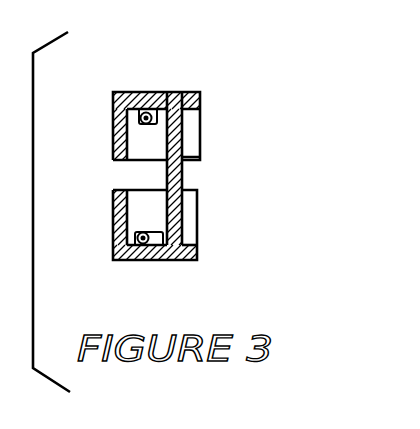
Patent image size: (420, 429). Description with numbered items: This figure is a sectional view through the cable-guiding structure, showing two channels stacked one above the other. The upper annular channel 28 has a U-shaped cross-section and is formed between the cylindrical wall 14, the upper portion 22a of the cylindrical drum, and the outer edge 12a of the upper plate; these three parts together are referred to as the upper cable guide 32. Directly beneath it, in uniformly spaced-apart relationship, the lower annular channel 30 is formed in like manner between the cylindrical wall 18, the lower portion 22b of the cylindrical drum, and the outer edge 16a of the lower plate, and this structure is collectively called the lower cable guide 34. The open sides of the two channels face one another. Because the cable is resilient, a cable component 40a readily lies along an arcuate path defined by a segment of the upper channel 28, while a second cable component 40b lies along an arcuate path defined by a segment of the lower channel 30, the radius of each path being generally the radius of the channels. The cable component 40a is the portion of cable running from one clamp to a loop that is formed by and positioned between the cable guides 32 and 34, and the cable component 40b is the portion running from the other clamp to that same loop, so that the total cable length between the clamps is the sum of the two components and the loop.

The outer edge of plate 12a is at (134, 97).
The cylindrical wall 14 is at (112, 128).
The outer edge of plate 16a is at (160, 253).
The cylindrical wall 18 is at (118, 208).
The upper portion of cylindrical drum 22a is at (182, 122).
The lower portion of cylindrical drum 22b is at (177, 228).
The upper annular channel 28 is at (148, 148).
The lower annular channel 30 is at (157, 208).
The upper cable guide 32 is at (106, 81).
The lower cable guide 34 is at (203, 272).
The cable component 40a is at (148, 114).
The cable component 40b is at (143, 244).